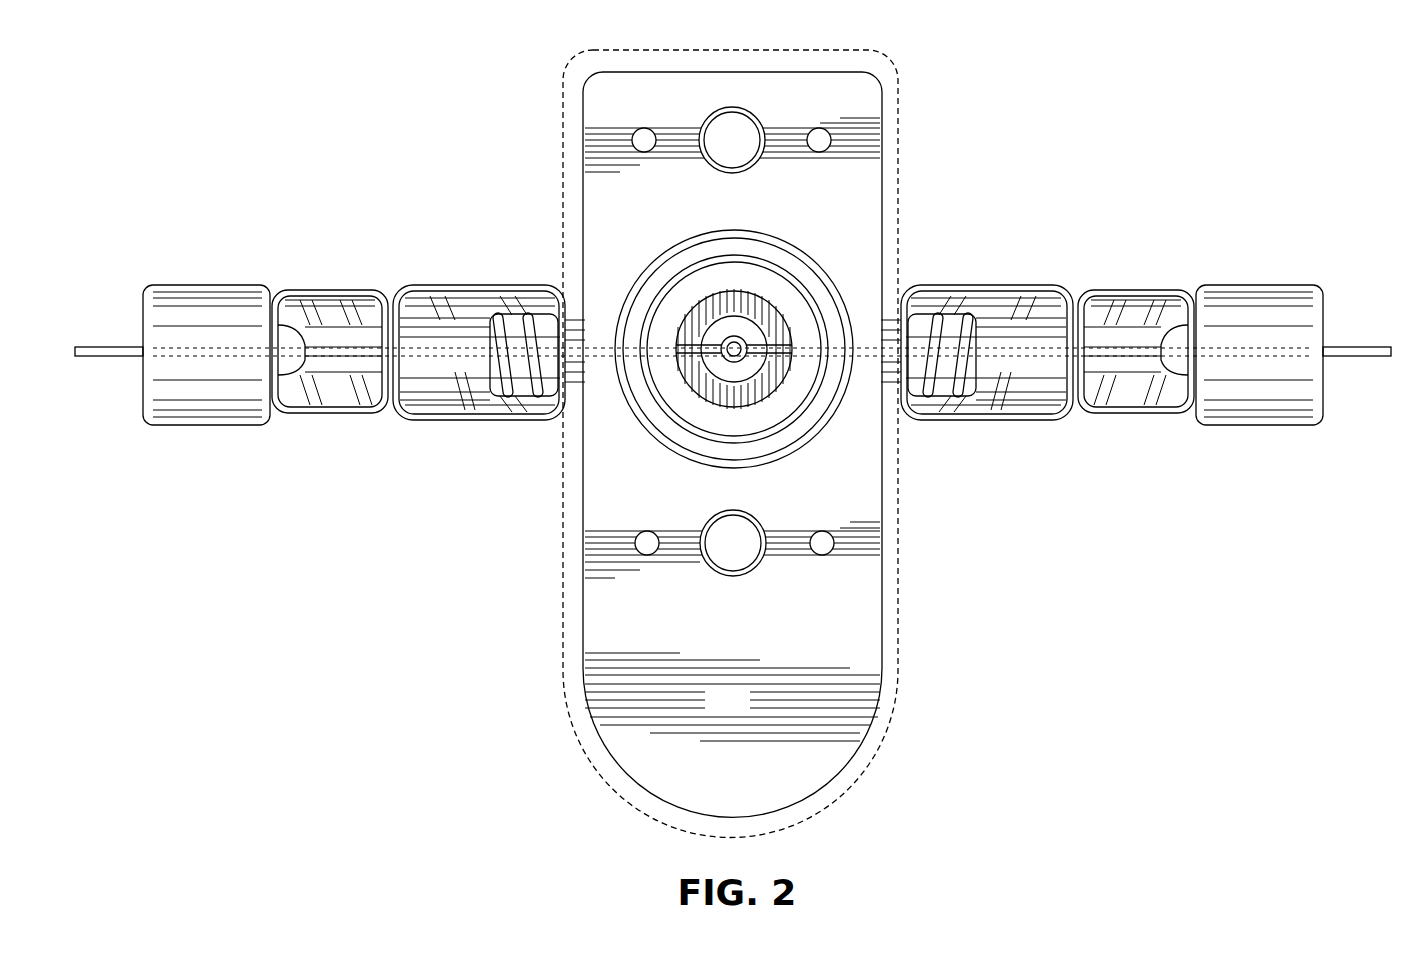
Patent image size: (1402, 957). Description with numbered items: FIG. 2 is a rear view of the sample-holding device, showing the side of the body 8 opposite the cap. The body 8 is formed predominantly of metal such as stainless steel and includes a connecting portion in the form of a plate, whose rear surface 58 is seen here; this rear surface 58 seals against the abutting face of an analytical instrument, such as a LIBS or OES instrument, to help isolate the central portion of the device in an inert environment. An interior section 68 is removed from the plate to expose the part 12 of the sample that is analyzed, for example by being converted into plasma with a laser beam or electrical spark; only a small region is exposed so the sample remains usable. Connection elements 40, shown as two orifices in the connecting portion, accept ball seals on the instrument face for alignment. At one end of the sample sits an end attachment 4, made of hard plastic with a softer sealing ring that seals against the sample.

The sample end attachment 4 is at (182, 285).
The body 8 is at (900, 115).
The exposed part of sample 12 is at (722, 358).
The connection element 40 is at (703, 124).
The rear surface of plate 58 is at (664, 218).
The interior section 68 is at (822, 452).